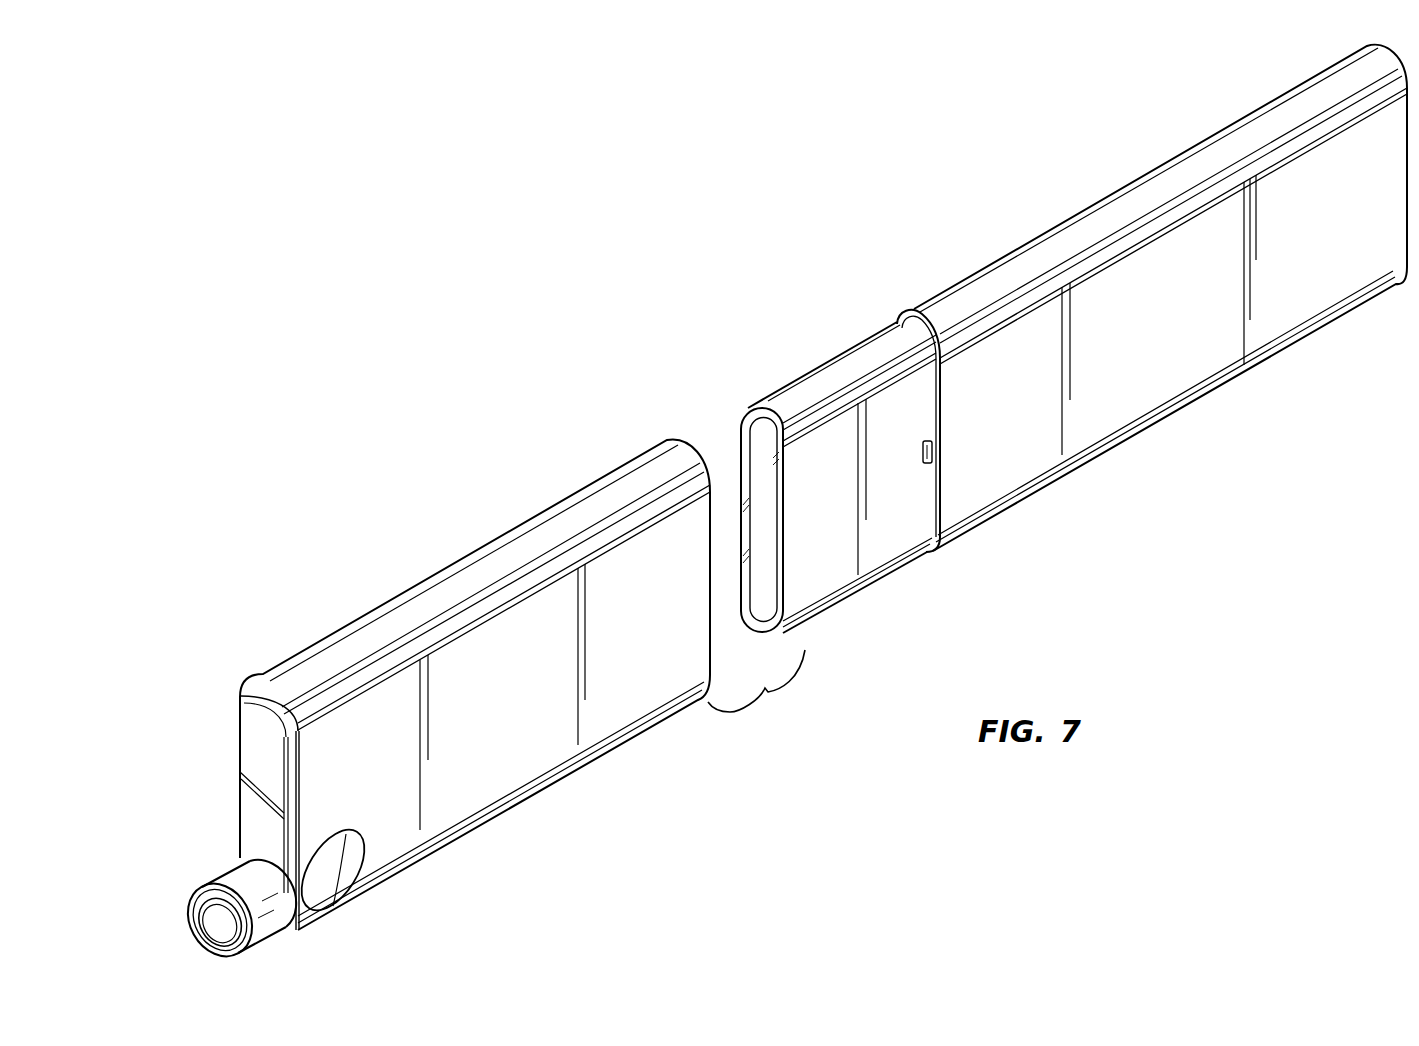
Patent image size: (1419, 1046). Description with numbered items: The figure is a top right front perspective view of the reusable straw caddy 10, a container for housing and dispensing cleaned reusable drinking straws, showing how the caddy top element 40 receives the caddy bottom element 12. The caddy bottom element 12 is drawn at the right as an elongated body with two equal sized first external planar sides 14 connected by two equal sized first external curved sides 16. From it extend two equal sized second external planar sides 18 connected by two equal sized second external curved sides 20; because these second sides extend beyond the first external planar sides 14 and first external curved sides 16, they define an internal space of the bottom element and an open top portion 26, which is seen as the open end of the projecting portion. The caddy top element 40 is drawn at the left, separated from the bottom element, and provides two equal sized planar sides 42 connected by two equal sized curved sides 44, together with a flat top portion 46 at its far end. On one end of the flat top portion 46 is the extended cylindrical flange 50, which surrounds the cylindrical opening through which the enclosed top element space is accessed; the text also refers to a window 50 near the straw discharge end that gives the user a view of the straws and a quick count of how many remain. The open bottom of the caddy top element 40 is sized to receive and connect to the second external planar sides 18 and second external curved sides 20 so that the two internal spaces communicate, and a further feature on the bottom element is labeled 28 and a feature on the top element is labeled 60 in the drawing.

The reusable straw caddy 10 is at (400, 405).
The caddy bottom element 12 is at (1120, 397).
The first external planar sides 14 is at (1195, 340).
The first external curved sides 16 is at (1092, 214).
The second external planar sides 18 is at (874, 550).
The second external curved sides 20 is at (834, 369).
The open top portion 26 is at (757, 449).
The latch 28 is at (932, 452).
The caddy top element 40 is at (625, 695).
The planar sides 42 is at (441, 812).
The curved sides 44 is at (428, 584).
The flat top portion 46 is at (262, 764).
The extended cylindrical flange 50 is at (248, 880).
The loop 60 is at (323, 870).